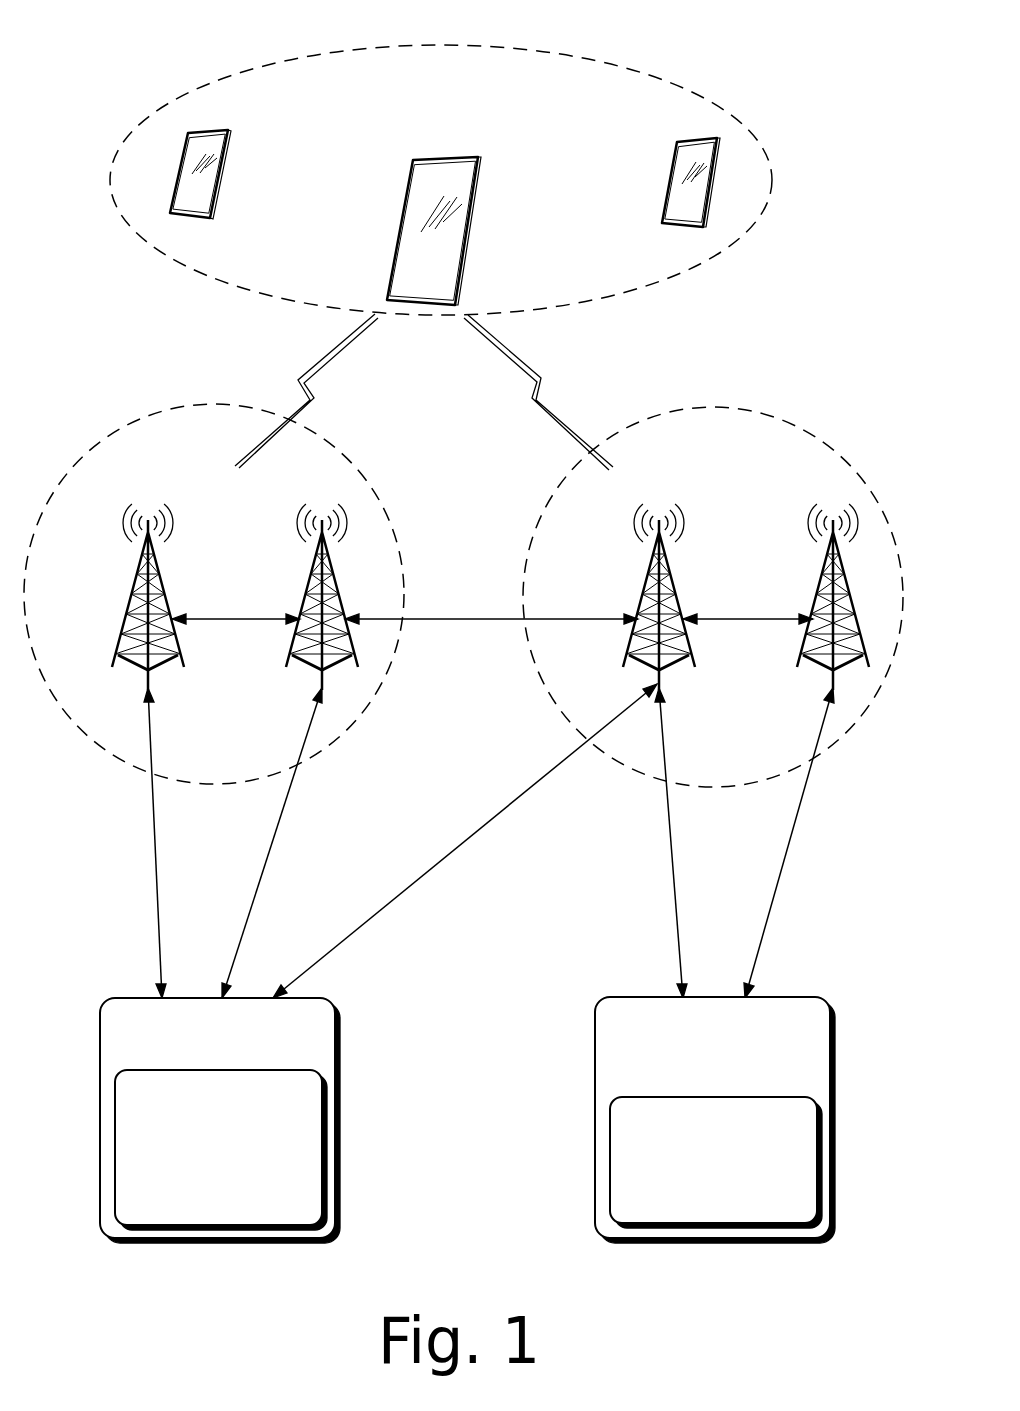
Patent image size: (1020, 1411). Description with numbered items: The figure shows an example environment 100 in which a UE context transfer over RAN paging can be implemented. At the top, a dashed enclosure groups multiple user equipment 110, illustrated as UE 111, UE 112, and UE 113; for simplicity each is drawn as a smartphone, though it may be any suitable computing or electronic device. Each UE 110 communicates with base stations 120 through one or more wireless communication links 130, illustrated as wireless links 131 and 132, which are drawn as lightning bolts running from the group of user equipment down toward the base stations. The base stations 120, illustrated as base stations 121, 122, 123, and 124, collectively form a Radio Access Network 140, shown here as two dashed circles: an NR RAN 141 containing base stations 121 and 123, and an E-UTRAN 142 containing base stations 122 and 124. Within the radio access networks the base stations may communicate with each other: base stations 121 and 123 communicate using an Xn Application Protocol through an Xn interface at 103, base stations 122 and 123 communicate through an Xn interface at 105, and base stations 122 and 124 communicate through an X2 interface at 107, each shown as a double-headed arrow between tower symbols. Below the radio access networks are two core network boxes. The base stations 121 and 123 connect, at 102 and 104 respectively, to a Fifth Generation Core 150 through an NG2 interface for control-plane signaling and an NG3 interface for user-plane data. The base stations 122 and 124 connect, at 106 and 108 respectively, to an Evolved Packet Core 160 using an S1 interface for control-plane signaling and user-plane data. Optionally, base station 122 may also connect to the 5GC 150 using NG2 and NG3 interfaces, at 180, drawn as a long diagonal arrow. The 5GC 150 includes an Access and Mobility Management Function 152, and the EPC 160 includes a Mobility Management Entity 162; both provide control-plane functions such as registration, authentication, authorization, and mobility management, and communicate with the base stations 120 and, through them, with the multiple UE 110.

The environment 100 is at (130, 45).
The user equipment 110 is at (690, 90).
The UE 111 is at (482, 160).
The UE 112 is at (230, 130).
The UE 113 is at (676, 143).
The base stations 120 is at (208, 492).
The base station 121 is at (135, 585).
The base station 122 is at (645, 585).
The base station 123 is at (308, 585).
The base station 124 is at (820, 585).
The wireless communication links 130 is at (548, 347).
The wireless link 131 is at (296, 388).
The wireless link 132 is at (560, 392).
The Radio Access Network 140 is at (464, 428).
The NR RAN 141 is at (362, 470).
The E-UTRAN 142 is at (571, 472).
The connection 102 is at (160, 838).
The Xn interface 103 is at (258, 622).
The connection 104 is at (277, 838).
The Xn interface 105 is at (500, 622).
The connection 106 is at (662, 838).
The X2 interface 107 is at (782, 622).
The connection 108 is at (780, 838).
The connection 180 is at (442, 862).
The Fifth Generation Core 150 is at (220, 1120).
The Access and Mobility Management Function 152 is at (221, 1150).
The Evolved Packet Core 160 is at (715, 1120).
The Mobility Management Entity 162 is at (716, 1162).